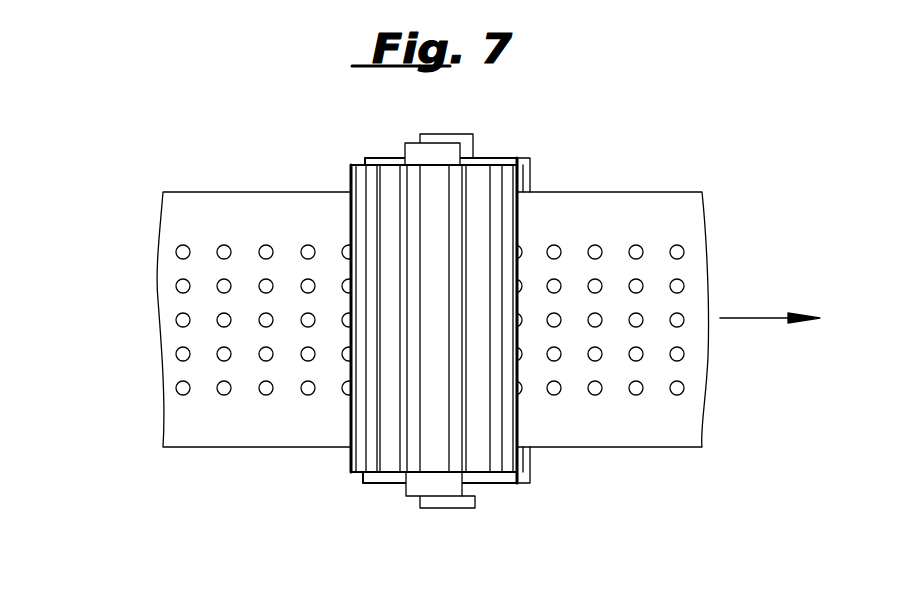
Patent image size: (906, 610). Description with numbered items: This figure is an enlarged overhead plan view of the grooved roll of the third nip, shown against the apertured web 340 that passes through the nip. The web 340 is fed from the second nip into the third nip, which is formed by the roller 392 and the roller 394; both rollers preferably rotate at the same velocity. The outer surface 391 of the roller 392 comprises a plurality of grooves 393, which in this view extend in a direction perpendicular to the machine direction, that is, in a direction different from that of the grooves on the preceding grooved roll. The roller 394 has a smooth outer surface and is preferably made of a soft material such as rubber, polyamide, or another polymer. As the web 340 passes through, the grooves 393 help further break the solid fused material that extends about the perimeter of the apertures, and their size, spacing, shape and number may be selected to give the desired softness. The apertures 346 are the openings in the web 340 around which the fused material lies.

The web 340 is at (280, 207).
The perforations (holes) 346 is at (595, 245).
The outer surface 391 is at (385, 180).
The roller 392 is at (477, 180).
The grooves 393 is at (408, 445).
The roller 394 is at (530, 478).